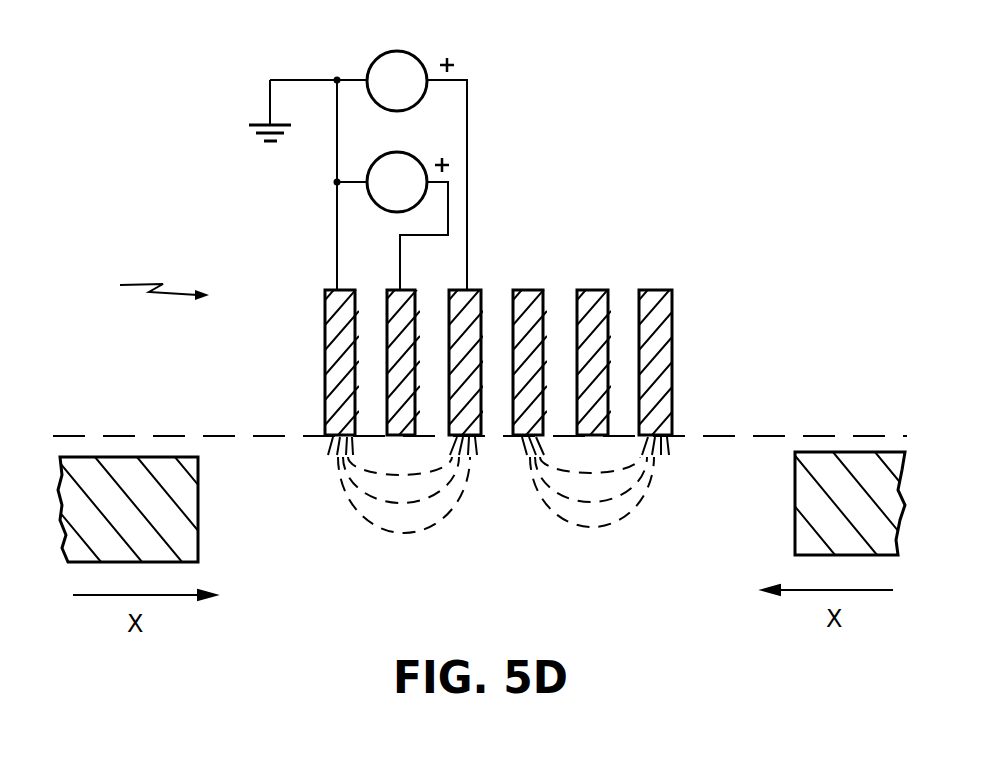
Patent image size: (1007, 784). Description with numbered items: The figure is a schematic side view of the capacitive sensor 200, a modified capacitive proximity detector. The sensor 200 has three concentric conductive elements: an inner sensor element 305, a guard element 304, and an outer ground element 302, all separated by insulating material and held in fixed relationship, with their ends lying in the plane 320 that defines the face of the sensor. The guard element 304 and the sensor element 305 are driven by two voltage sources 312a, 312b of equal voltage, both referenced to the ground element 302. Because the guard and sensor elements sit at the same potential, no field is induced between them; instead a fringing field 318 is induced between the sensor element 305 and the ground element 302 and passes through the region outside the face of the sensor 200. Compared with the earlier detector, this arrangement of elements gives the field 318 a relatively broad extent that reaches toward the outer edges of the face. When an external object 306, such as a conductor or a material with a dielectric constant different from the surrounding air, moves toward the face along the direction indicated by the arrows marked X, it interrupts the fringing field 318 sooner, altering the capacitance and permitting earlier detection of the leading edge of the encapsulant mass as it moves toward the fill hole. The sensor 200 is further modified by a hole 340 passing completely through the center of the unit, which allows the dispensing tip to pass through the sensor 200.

The capacitive sensor 200 is at (132, 288).
The ground element 302 is at (663, 288).
The guard element 304 is at (597, 290).
The sensor element 305 is at (535, 287).
The external object 306 is at (183, 525).
The voltage source 312a is at (376, 203).
The voltage source 312b is at (418, 60).
The fringing field 318 is at (433, 527).
The plane 320 is at (221, 438).
The hole 340 is at (536, 322).